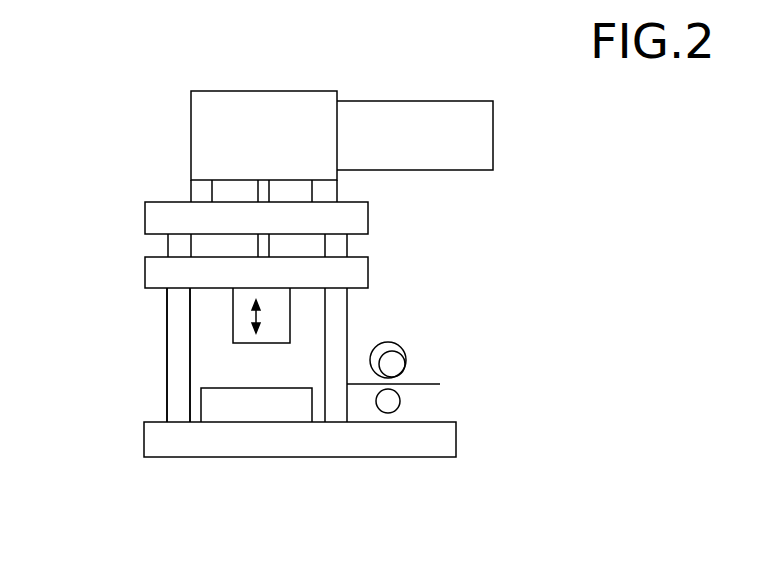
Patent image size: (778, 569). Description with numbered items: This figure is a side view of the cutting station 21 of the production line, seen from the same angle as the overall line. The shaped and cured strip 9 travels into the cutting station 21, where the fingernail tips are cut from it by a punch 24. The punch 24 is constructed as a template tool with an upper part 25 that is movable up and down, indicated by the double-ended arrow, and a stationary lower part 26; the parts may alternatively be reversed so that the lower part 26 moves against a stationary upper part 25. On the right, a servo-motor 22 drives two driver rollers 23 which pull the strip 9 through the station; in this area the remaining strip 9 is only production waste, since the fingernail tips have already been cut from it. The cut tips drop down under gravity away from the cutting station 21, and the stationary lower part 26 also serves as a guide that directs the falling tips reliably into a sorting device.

The cutting station 21 is at (90, 117).
The servo-motor 22 is at (390, 356).
The driver rollers 23 is at (391, 403).
The punch 24 is at (212, 335).
The upper part 25 is at (272, 322).
The lower part 26 is at (242, 408).
The strip 9 is at (440, 384).